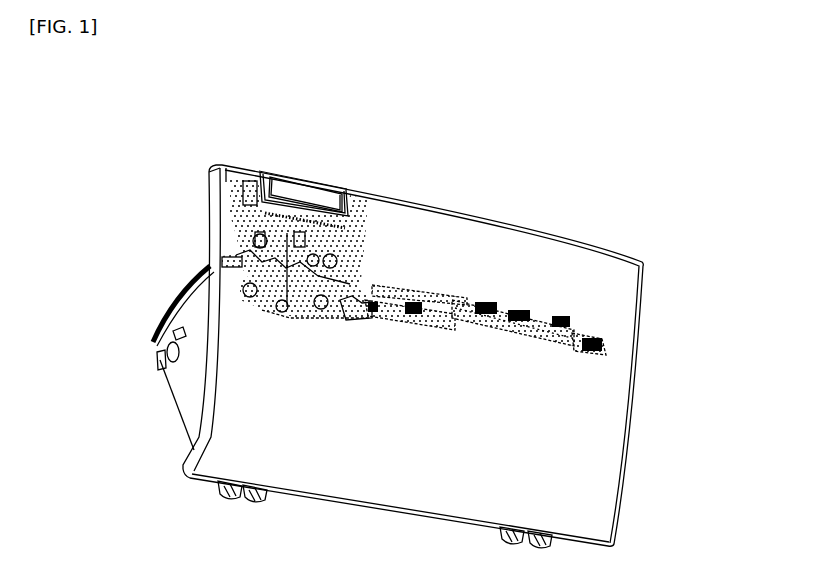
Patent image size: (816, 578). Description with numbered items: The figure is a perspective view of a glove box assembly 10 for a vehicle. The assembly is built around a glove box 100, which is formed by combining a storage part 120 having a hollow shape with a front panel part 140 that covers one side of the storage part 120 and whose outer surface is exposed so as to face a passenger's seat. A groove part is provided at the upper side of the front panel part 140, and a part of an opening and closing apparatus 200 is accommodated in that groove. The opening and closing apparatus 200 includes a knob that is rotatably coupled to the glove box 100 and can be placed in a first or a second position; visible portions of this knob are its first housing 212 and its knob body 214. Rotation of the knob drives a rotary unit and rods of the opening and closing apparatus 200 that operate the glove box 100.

The glove box assembly 10 is at (132, 102).
The glove box 100 is at (598, 218).
The storage part 120 is at (184, 396).
The front panel part 140 is at (603, 409).
The opening and closing apparatus 200 is at (447, 289).
The first housing 212 is at (263, 177).
The knob body 214 is at (311, 190).